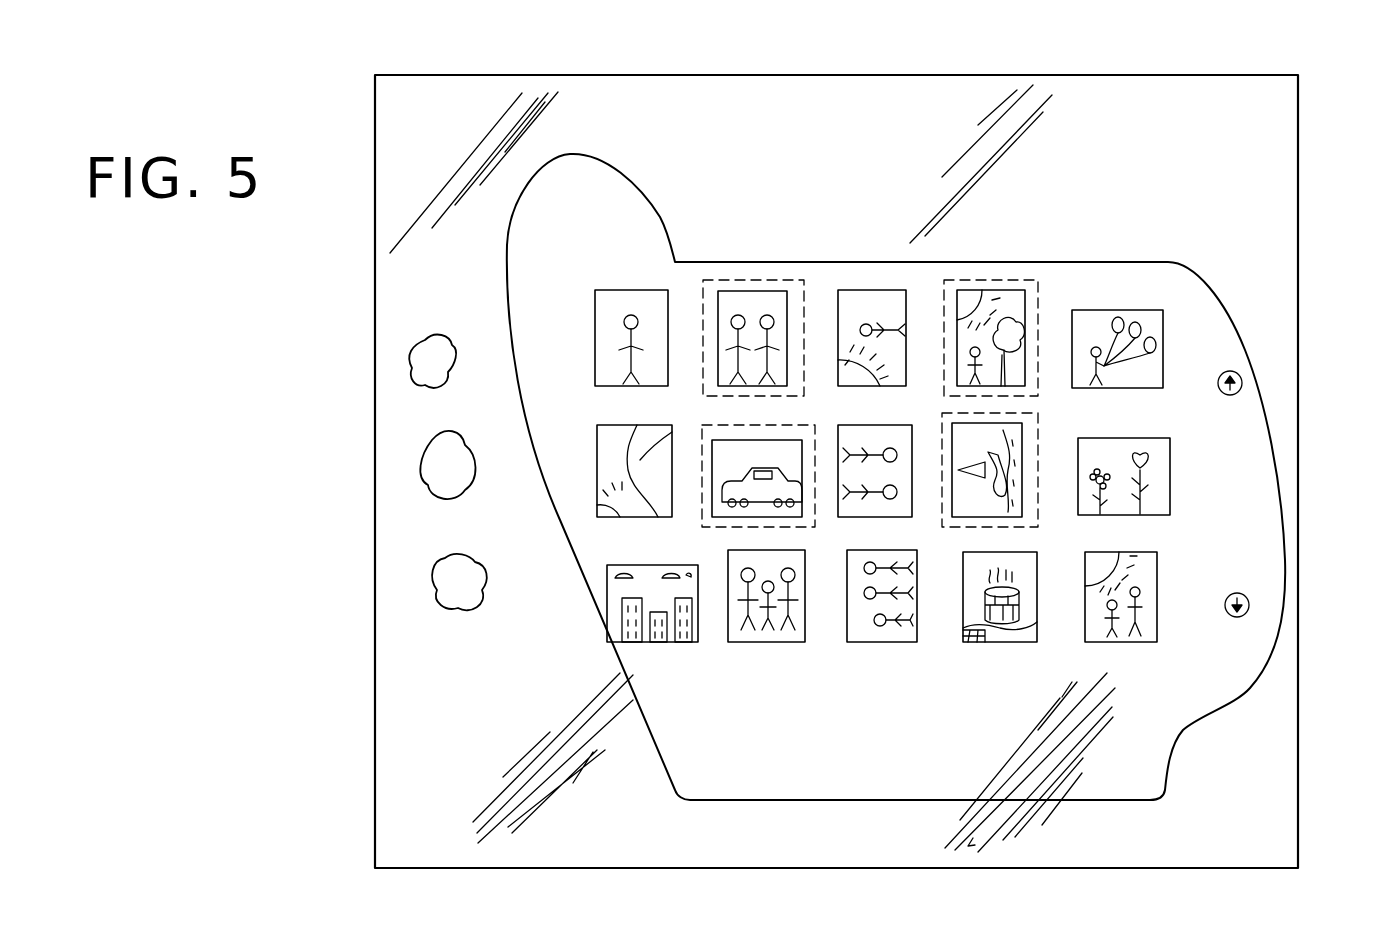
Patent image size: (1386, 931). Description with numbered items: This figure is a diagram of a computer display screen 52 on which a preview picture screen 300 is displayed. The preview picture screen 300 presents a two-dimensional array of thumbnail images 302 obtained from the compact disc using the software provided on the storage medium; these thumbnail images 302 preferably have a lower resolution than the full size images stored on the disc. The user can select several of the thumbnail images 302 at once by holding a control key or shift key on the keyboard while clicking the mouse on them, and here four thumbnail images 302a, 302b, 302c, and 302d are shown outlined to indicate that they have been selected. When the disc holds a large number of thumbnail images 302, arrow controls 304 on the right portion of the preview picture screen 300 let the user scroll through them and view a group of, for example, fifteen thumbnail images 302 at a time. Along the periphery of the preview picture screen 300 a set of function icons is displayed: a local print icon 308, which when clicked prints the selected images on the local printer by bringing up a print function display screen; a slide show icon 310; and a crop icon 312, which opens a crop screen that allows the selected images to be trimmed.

The display screen 52 is at (990, 75).
The preview picture screen 300 is at (1120, 262).
The thumbnail images 302 is at (596, 300).
The selected thumbnail image 302a is at (748, 278).
The selected thumbnail image 302b is at (990, 278).
The selected thumbnail image 302c is at (703, 425).
The selected thumbnail image 302d is at (1038, 455).
The arrow controls 304 is at (1243, 383).
The local print icon 308 is at (412, 372).
The slide show icon 310 is at (422, 460).
The crop icon 312 is at (437, 572).